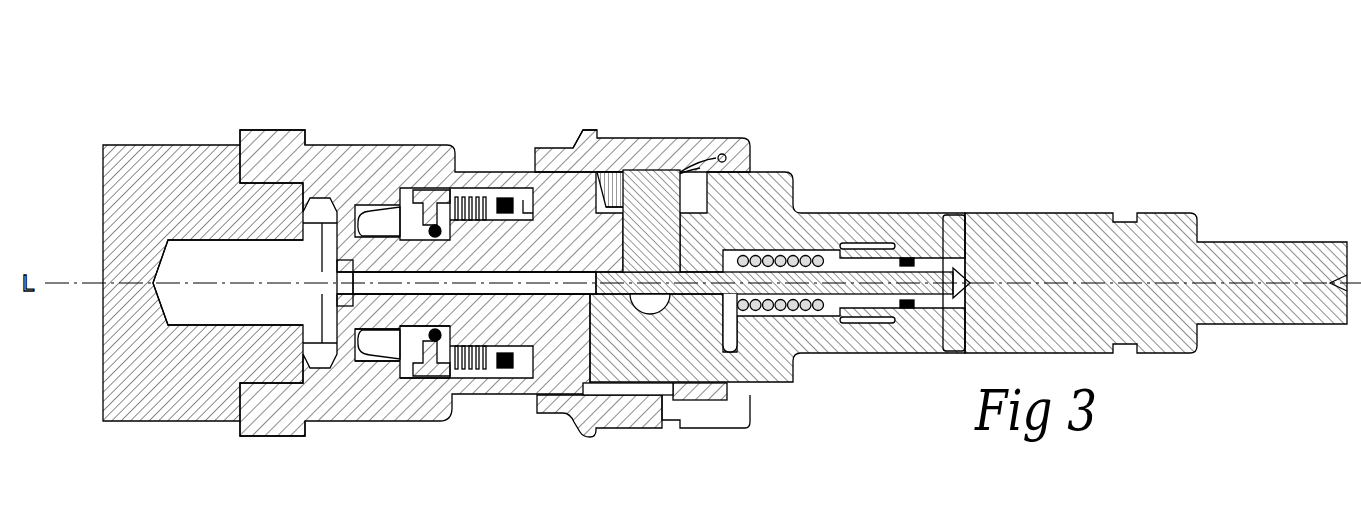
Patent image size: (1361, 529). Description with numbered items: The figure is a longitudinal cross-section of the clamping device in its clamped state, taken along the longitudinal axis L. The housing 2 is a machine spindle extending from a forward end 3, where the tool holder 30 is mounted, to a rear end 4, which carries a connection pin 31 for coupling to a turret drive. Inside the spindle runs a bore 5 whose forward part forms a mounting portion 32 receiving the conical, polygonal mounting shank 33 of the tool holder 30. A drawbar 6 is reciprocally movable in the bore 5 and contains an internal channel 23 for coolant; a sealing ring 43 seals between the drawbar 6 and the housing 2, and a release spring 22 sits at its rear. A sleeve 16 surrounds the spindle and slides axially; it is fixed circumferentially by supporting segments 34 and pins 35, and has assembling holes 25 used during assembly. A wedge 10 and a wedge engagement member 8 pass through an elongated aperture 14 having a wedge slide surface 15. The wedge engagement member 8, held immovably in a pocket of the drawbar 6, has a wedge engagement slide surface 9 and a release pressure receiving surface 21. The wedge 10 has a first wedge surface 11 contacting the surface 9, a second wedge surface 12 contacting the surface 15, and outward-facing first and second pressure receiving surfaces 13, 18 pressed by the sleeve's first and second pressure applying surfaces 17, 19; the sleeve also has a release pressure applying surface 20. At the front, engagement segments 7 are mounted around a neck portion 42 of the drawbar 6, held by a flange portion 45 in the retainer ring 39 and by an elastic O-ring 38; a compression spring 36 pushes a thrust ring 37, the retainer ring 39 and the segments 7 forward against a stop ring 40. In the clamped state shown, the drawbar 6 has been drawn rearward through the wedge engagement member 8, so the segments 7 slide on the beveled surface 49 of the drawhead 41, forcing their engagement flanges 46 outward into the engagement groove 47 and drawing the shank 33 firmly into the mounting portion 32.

The housing 2 is at (352, 165).
The forward end 3 is at (235, 140).
The rear end 4 is at (1243, 172).
The bore 5 is at (740, 352).
The drawbar 6 is at (478, 245).
The engagement segments 7 is at (417, 322).
The wedge engagement member 8 is at (740, 235).
The wedge engagement slide surface 9 is at (642, 91).
The wedge 10 is at (608, 200).
The first wedge surface 11 is at (648, 168).
The second wedge surface 12 is at (518, 145).
The first pressure receiving surface 13 is at (617, 111).
The aperture 14 is at (620, 215).
The wedge slide surface 15 is at (593, 197).
The sleeve 16 is at (625, 405).
The first pressure applying surface 17 is at (613, 172).
The second pressure receiving surface 18 is at (600, 173).
The second pressure applying surface 19 is at (640, 197).
The release pressure applying surface 20 is at (724, 156).
The release pressure receiving surface 21 is at (693, 162).
The release spring 22 is at (807, 258).
The internal channel 23 is at (870, 281).
The assembling holes 25 is at (727, 418).
The tool holder 30 is at (130, 150).
The connection pin 31 is at (1269, 303).
The mounting portion 32 is at (272, 101).
The mounting shank 33 is at (292, 168).
The supporting segments 34 is at (686, 408).
The pins 35 is at (730, 388).
The compression spring 36 is at (468, 362).
The thrust ring 37 is at (440, 363).
The elastic O-ring 38 is at (443, 334).
The retainer ring 39 is at (433, 358).
The stop ring 40 is at (400, 358).
The drawhead 41 is at (357, 232).
The neck portion 42 is at (410, 252).
The sealing ring 43 is at (503, 366).
The flange portion 45 is at (420, 348).
The engagement flanges 46 is at (375, 350).
The engagement groove 47 is at (337, 360).
The beveled surface 49 is at (380, 363).